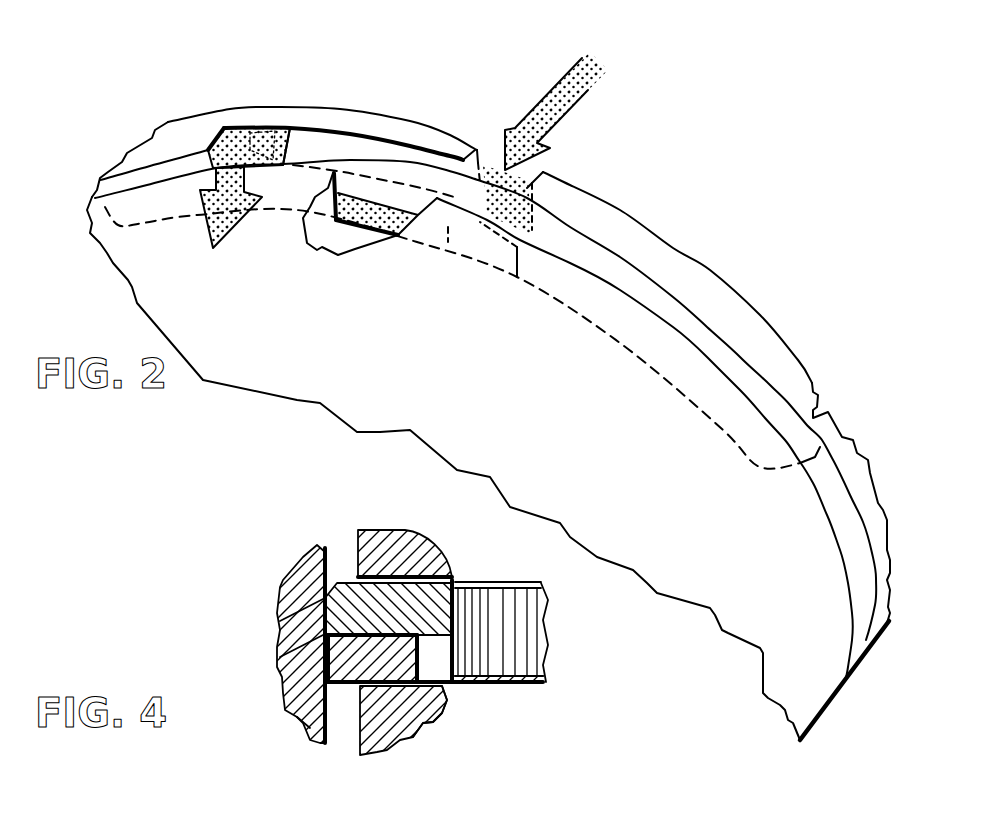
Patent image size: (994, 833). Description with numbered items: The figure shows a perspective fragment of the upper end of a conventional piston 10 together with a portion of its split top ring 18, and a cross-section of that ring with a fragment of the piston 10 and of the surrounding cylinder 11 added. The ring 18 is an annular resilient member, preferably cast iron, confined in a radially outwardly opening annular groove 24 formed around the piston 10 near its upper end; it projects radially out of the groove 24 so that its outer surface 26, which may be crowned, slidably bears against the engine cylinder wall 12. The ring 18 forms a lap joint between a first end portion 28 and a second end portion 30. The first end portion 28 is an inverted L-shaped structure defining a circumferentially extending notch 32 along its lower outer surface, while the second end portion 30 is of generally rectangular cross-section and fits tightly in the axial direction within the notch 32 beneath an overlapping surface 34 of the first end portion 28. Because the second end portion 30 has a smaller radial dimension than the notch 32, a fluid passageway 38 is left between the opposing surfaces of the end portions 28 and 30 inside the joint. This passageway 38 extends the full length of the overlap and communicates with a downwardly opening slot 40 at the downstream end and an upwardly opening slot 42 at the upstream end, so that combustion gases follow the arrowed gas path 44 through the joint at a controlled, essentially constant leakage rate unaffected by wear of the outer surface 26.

In FIG. 4, the piston 10 is at (390, 545).
In FIG. 4, the cylinder 11 is at (290, 590).
In FIG. 4, the engine cylinder wall 12 is at (330, 557).
In FIG. 2, the split top ring 18 is at (633, 217).
In FIG. 4, the split top ring 18 is at (513, 688).
In FIG. 2, the annular groove 24 is at (838, 497).
In FIG. 4, the annular groove 24 is at (353, 690).
In FIG. 2, the outer surface 26 is at (652, 258).
In FIG. 4, the outer surface 26 is at (275, 657).
In FIG. 2, the first end portion 28 is at (380, 130).
In FIG. 4, the first end portion 28 is at (390, 590).
In FIG. 2, the second end portion 30 is at (405, 157).
In FIG. 4, the second end portion 30 is at (297, 717).
In FIG. 2, the notch 32 is at (280, 133).
In FIG. 4, the notch 32 is at (425, 657).
In FIG. 4, the overlapping surface 34 is at (270, 685).
In FIG. 2, the fluid passageway 38 is at (380, 210).
In FIG. 4, the fluid passageway 38 is at (440, 728).
In FIG. 2, the downwardly opening slot 40 is at (221, 133).
In FIG. 2, the upwardly opening slot 42 is at (483, 163).
In FIG. 2, the arrowed gas path 44 is at (570, 107).